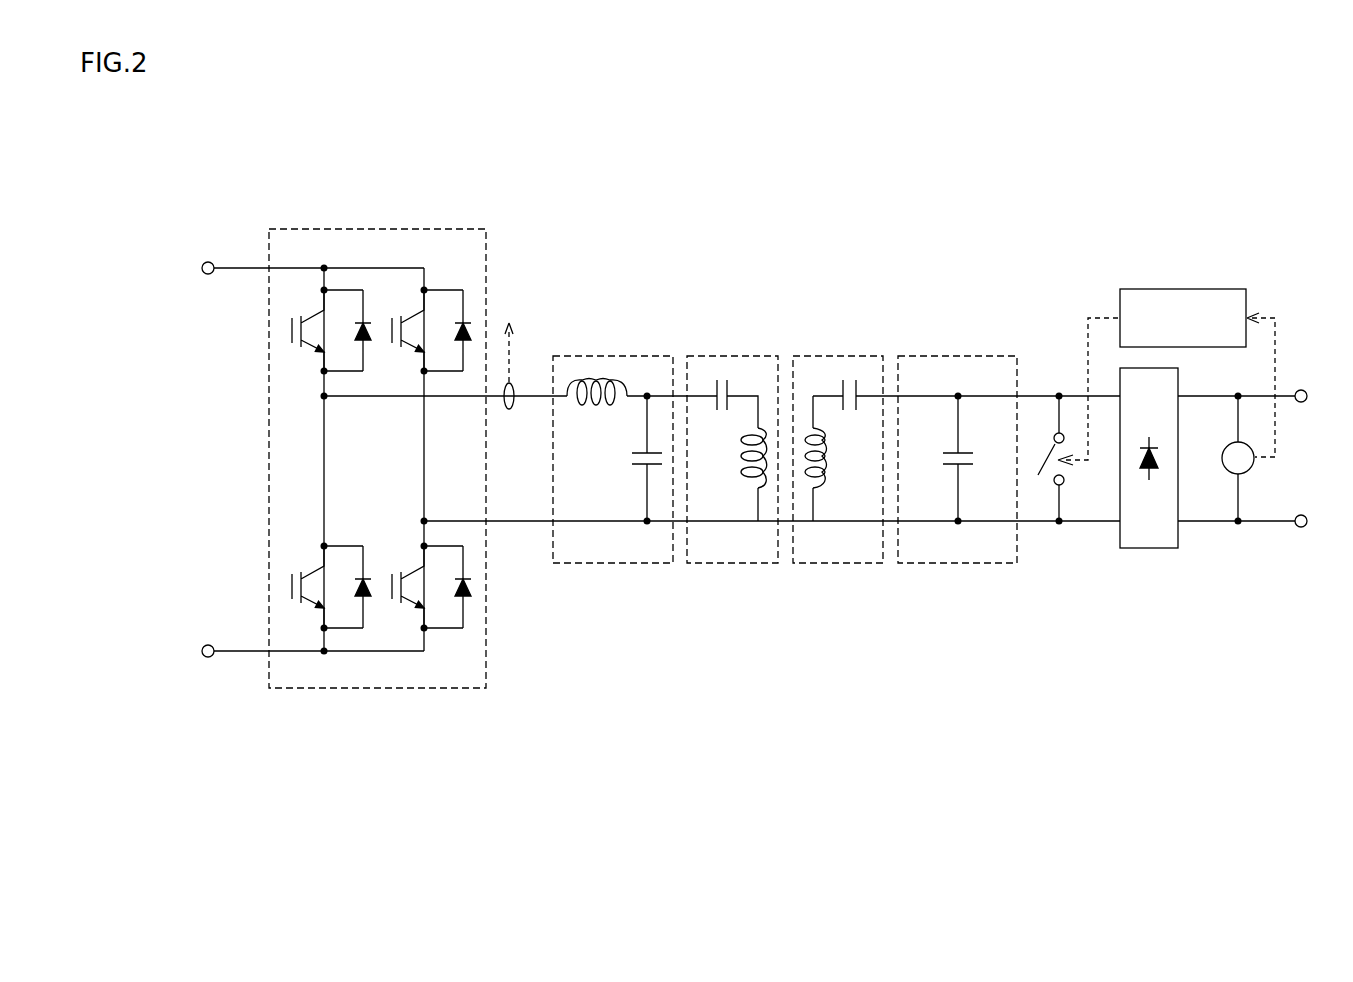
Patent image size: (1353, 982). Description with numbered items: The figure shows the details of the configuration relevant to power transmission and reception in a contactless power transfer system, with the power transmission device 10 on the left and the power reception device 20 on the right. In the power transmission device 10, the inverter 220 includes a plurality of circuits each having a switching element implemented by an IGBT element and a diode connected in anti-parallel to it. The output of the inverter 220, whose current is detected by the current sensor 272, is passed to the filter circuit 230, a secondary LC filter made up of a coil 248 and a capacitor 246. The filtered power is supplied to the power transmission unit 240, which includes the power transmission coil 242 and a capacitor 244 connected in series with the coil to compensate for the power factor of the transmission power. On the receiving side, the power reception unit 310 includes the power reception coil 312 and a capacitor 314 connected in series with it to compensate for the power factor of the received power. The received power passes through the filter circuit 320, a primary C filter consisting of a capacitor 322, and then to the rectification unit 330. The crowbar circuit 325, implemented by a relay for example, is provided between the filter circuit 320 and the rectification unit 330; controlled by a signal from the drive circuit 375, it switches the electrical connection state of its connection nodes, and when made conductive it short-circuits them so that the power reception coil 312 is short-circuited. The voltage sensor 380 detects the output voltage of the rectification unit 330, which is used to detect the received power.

The power transmission device 10 is at (691, 653).
The power reception device 20 is at (907, 654).
The inverter 220 is at (380, 229).
The current sensor 272 is at (514, 390).
The filter circuit 230 is at (648, 356).
The coil 248 is at (603, 380).
The capacitor 246 is at (640, 468).
The power transmission unit 240 is at (753, 356).
The capacitor 244 is at (714, 388).
The power transmission coil 242 is at (750, 485).
The power reception unit 310 is at (815, 356).
The power reception coil 312 is at (822, 482).
The capacitor 314 is at (858, 388).
The filter circuit 320 is at (958, 563).
The capacitor 322 is at (968, 453).
The crowbar circuit 325 is at (1040, 478).
The rectification unit 330 is at (1150, 548).
The drive circuit 375 is at (1213, 289).
The voltage sensor 380 is at (1254, 467).